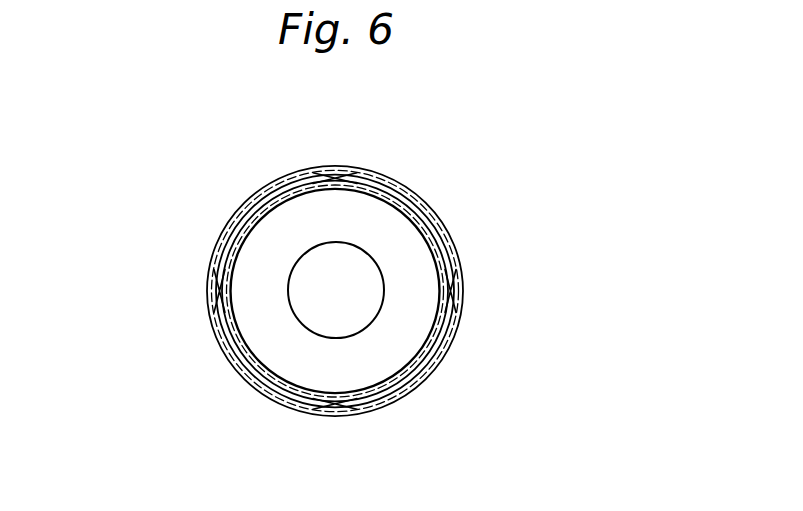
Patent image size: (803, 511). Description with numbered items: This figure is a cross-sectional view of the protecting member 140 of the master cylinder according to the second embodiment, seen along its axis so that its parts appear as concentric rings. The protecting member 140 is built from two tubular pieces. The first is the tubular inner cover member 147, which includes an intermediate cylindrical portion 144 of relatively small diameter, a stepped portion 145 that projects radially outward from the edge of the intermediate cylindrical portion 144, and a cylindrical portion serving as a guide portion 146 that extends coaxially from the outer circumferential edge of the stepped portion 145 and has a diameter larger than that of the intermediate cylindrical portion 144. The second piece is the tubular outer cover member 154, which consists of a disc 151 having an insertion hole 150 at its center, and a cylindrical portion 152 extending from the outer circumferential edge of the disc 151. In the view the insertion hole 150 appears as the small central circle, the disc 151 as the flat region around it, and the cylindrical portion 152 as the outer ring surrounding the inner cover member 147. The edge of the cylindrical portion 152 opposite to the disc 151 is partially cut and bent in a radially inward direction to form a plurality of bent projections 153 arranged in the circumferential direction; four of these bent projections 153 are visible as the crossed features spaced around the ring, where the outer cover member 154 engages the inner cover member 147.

The protecting member 140 is at (178, 218).
The intermediate cylindrical portion 144 is at (262, 210).
The stepped portion 145 is at (287, 172).
The cylindrical portion (guide portion) 146 is at (454, 230).
The inner cover member 147 is at (233, 341).
The insertion hole 150 is at (337, 338).
The disc 151 is at (370, 368).
The cylindrical portion 152 is at (396, 168).
The bent projections 153 is at (341, 168).
The outer cover member 154 is at (438, 196).